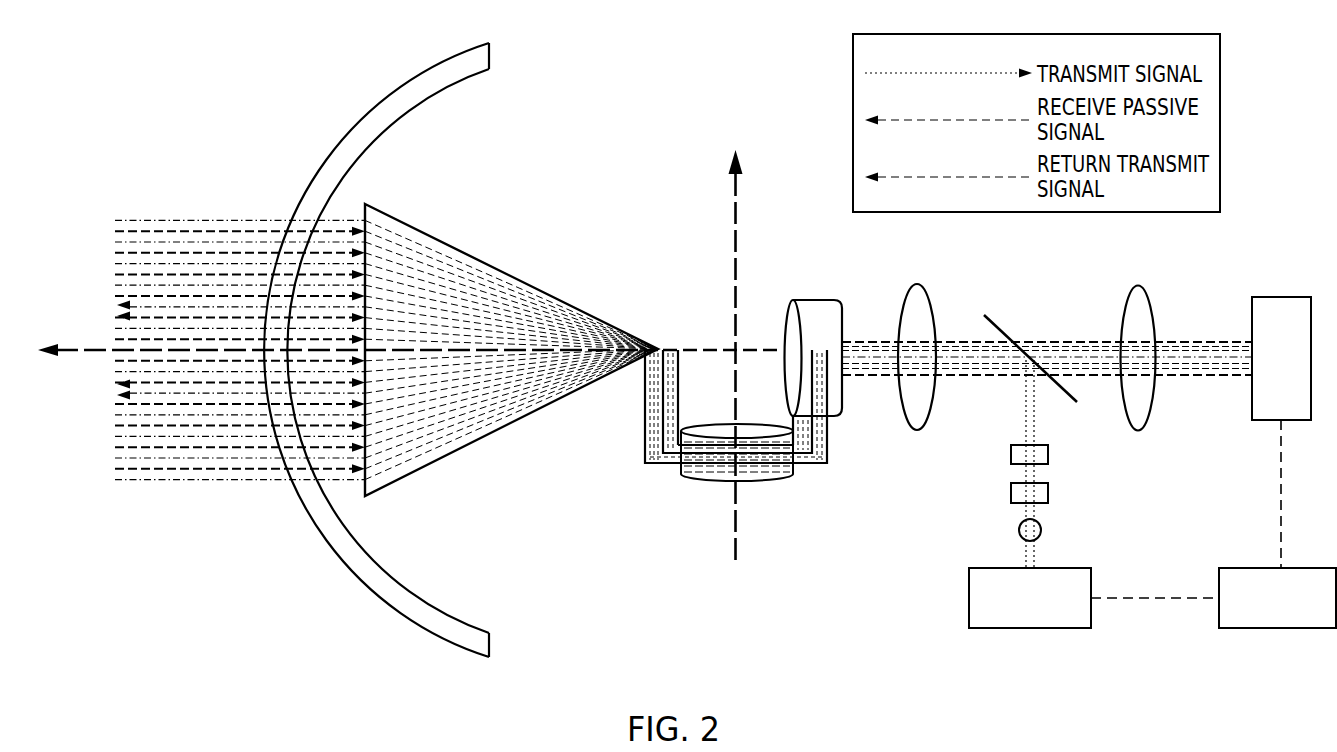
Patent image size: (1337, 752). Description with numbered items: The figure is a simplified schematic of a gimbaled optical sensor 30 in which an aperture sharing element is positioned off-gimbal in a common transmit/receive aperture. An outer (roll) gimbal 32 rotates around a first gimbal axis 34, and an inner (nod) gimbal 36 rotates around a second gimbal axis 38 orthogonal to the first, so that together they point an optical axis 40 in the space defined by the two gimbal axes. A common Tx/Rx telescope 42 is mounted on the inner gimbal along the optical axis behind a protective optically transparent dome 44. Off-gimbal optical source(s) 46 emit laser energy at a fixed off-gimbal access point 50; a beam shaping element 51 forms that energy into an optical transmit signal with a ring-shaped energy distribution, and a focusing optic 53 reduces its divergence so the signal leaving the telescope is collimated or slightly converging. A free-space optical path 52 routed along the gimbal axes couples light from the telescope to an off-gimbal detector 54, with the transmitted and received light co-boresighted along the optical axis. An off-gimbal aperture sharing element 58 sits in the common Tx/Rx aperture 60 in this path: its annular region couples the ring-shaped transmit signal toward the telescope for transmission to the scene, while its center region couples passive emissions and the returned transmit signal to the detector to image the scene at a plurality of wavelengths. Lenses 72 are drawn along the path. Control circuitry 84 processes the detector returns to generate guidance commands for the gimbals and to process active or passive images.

The gimbaled optical sensor 30 is at (205, 58).
The outer (roll) gimbal 32 is at (765, 479).
The first gimbal axis 34 is at (732, 545).
The inner (nod) gimbal 36 is at (824, 300).
The second gimbal axis 38 is at (699, 348).
The optical axis 40 is at (75, 347).
The common Tx/Rx telescope 42 is at (512, 278).
The protective optically transparent dome 44 is at (368, 112).
The off-gimbal optical source(s) 46 is at (1046, 568).
The off-gimbal access point 50 is at (1019, 530).
The beam shaping element 51 is at (1010, 493).
The free-space optical path 52 is at (636, 432).
The focusing optic 53 is at (1010, 455).
The off-gimbal detector 54 is at (1290, 296).
The off-gimbal aperture sharing element (ASE) 58 is at (1032, 356).
The common Tx/Rx aperture 60 is at (1016, 368).
The lens 72 is at (920, 290).
The control circuitry 84 is at (1283, 630).